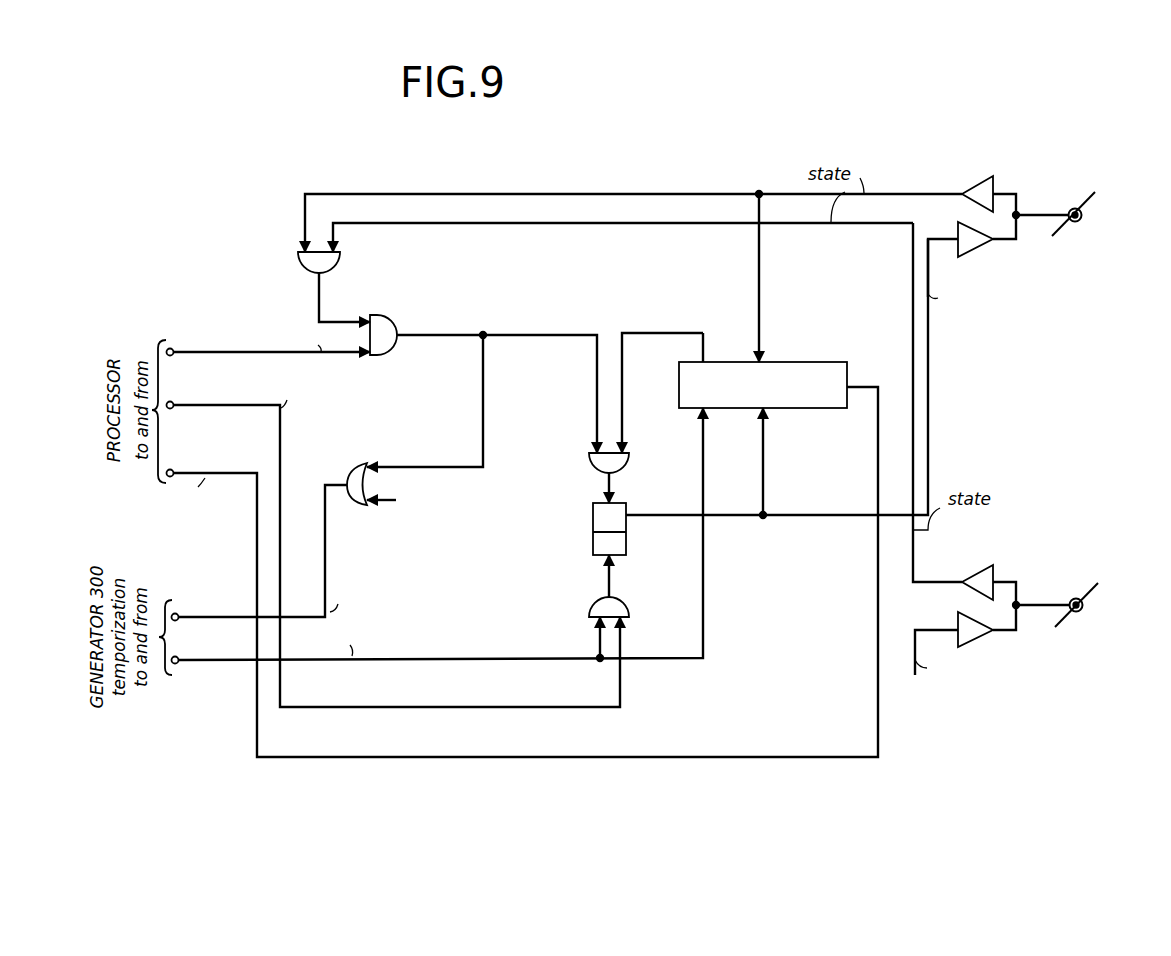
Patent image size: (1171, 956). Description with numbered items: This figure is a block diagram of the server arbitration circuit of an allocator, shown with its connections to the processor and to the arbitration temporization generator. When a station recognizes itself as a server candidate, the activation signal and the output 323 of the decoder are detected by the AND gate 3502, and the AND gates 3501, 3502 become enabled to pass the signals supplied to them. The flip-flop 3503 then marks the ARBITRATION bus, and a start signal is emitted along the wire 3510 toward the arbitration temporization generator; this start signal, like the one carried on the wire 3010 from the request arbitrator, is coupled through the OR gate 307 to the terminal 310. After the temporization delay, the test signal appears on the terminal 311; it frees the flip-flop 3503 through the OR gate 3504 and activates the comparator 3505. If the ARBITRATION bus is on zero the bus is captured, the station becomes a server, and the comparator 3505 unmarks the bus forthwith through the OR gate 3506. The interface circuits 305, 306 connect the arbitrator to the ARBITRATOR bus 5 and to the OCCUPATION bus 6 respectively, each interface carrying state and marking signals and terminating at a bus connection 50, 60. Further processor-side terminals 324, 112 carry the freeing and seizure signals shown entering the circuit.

The AND gate 3501 is at (340, 262).
The AND gate 3502 is at (390, 322).
The flip-flop 3503 is at (593, 525).
The OR gate 3504 is at (618, 601).
The comparator 3505 is at (794, 360).
The OR gate 3506 is at (625, 459).
The wire 3510 is at (396, 466).
The wire 3010 is at (390, 501).
The OR gate 307 is at (358, 506).
The output of decoder 323 is at (170, 349).
The freeing terminal 324 is at (170, 403).
The seizure terminal 112 is at (170, 471).
The terminal 310 is at (176, 615).
The terminal 311 is at (176, 658).
The interface circuit 305 is at (963, 205).
The interface circuit 306 is at (960, 599).
The arbitrator bus connection 50 is at (1070, 206).
The ARBITRATOR bus 5 is at (1058, 233).
The occupation bus connection 60 is at (1070, 603).
The OCCUPATION bus 6 is at (1060, 625).